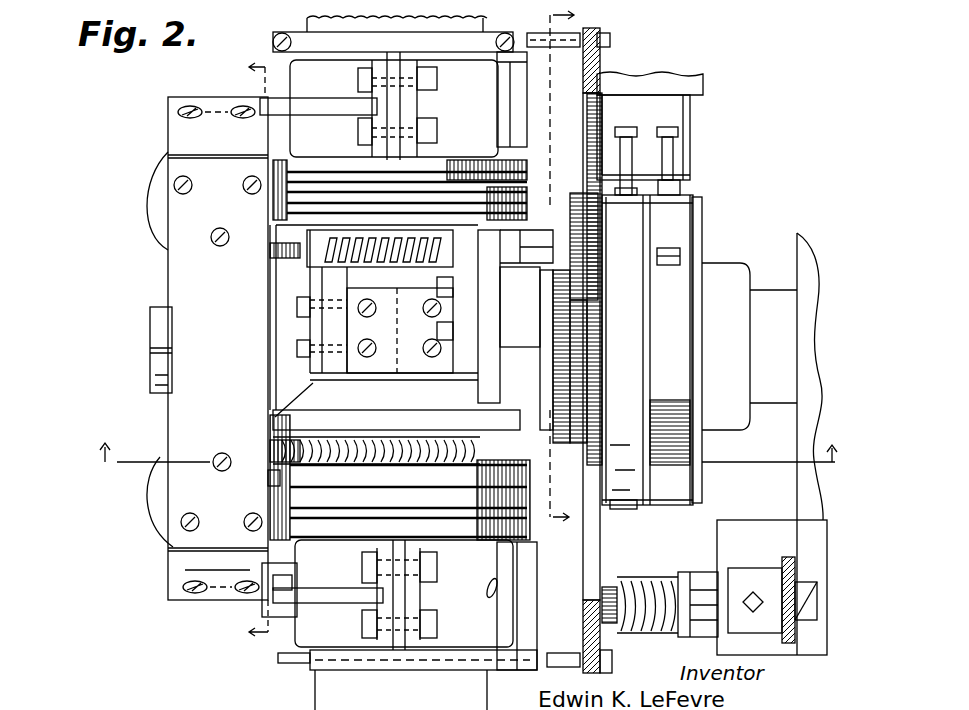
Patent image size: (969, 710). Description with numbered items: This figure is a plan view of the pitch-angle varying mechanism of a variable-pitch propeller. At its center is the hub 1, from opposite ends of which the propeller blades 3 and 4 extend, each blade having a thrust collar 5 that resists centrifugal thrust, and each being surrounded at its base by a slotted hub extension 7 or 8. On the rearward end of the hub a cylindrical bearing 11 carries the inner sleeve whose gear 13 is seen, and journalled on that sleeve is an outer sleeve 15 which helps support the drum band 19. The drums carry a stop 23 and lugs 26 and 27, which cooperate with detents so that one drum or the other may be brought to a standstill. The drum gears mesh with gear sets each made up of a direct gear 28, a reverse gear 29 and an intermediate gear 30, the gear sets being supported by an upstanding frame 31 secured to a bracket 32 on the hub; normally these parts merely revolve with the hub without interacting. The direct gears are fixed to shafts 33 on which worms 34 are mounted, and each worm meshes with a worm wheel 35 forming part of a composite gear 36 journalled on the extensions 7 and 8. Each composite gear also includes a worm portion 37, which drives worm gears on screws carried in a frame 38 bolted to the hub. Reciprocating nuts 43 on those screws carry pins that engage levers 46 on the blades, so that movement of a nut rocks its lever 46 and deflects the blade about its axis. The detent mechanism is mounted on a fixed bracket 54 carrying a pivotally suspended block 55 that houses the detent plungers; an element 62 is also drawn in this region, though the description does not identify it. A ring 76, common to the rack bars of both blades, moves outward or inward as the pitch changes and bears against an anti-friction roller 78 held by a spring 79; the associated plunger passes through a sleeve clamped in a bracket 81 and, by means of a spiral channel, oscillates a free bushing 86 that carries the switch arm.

The hub 1 is at (289, 294).
The propeller blade 3 is at (413, 25).
The propeller blade 4 is at (290, 698).
The thrust collar 5 is at (245, 353).
The hub extension 7 is at (302, 80).
The hub extension 8 is at (490, 637).
The cylindrical bearing 11 is at (697, 233).
The gear 13 is at (558, 458).
The outer sleeve 15 is at (602, 416).
The drum band 19 is at (692, 457).
The stop 23 is at (680, 253).
The lug 26 is at (684, 190).
The lug 27 is at (620, 510).
The direct gear 28 is at (598, 278).
The reverse gear 29 is at (553, 337).
The intermediate gear 30 is at (580, 382).
The upstanding frame 31 is at (490, 310).
The bracket 32 is at (380, 365).
The shaft 33 is at (560, 232).
The worm 34 is at (385, 262).
The worm wheel 35 is at (270, 250).
The composite gear 36 is at (268, 478).
The worm portion 37 is at (290, 165).
The frame 38 is at (170, 285).
The reciprocating nut 43 is at (156, 212).
The lever 46 is at (268, 120).
The fixed bracket 54 is at (703, 80).
The block 55 is at (690, 102).
The terminals 62 is at (655, 125).
The ring 76 is at (597, 557).
The anti-friction roller 78 is at (587, 603).
The spring 79 is at (660, 578).
The bracket 81 is at (695, 572).
The free bushing 86 is at (785, 557).